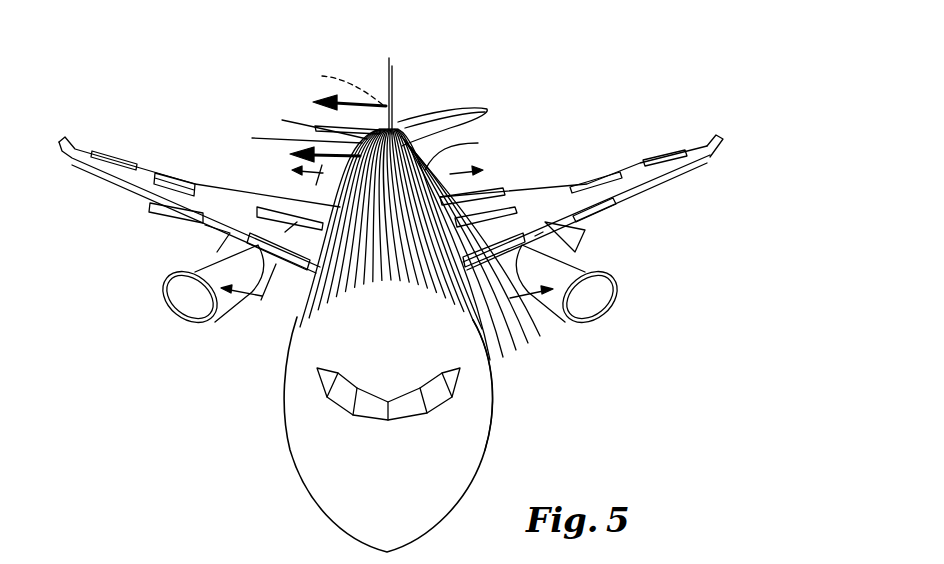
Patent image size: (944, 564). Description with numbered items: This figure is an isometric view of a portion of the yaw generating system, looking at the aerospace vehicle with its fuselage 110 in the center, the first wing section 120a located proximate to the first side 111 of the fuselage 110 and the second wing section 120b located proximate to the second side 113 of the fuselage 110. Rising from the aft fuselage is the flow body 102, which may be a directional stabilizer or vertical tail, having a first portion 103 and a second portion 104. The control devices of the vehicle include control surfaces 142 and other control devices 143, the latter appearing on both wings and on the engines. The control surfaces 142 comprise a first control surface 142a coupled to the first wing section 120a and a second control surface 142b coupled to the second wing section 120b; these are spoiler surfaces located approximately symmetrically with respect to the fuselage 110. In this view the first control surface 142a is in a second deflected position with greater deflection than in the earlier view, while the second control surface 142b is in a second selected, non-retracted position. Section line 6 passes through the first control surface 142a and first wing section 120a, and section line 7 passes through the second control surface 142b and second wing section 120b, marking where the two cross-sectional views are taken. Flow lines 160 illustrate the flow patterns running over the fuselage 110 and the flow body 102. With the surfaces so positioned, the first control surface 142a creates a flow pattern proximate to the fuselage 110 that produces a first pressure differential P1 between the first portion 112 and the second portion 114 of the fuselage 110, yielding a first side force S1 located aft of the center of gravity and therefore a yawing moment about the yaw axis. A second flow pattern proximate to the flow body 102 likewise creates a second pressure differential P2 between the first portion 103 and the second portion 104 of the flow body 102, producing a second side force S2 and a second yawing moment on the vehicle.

The flow body 102 is at (392, 70).
The first portion of the flow body 103 is at (387, 106).
The second portion of the flow body 104 is at (399, 122).
The fuselage 110 is at (295, 462).
The first side 111 is at (495, 428).
The first portion of the fuselage 112 is at (469, 151).
The second side 113 is at (287, 400).
The second portion of the fuselage 114 is at (300, 127).
The flow lines 160 is at (467, 120).
The first wing section 120a is at (560, 207).
The second wing section 120b is at (222, 207).
The control surface 142 is at (232, 72).
The first control surface 142a is at (543, 232).
The second control surface 142b is at (297, 222).
The other control devices 143 is at (115, 152).
The line 6— 6 is at (491, 240).
The line 7— 7 is at (281, 240).
The first side force S1 is at (310, 153).
The second side force S2 is at (294, 101).
The first pressure differential P1 is at (296, 138).
The second pressure differential P2 is at (341, 85).